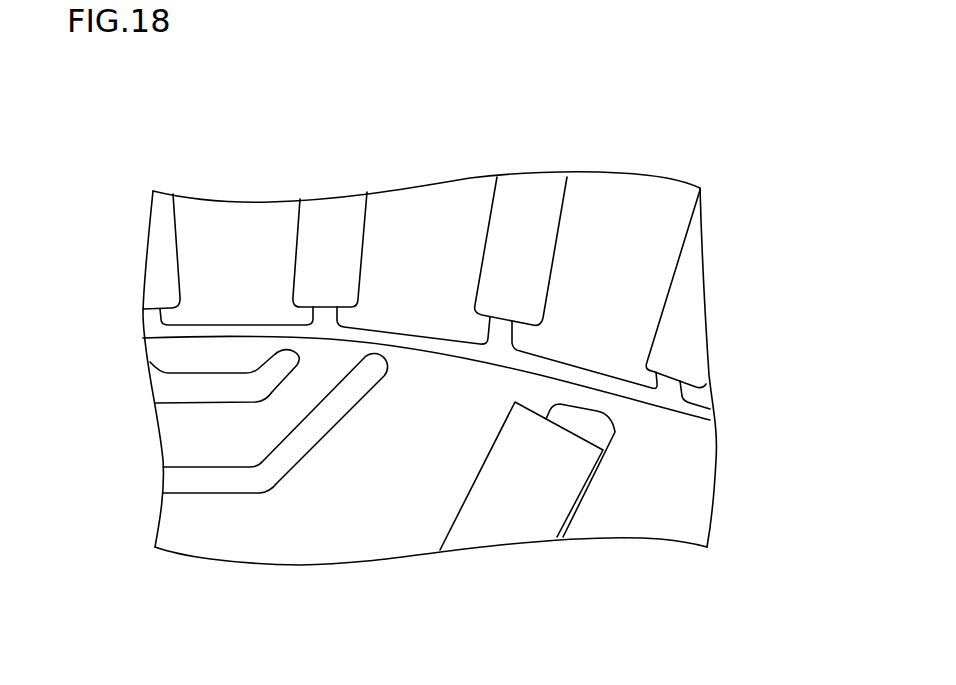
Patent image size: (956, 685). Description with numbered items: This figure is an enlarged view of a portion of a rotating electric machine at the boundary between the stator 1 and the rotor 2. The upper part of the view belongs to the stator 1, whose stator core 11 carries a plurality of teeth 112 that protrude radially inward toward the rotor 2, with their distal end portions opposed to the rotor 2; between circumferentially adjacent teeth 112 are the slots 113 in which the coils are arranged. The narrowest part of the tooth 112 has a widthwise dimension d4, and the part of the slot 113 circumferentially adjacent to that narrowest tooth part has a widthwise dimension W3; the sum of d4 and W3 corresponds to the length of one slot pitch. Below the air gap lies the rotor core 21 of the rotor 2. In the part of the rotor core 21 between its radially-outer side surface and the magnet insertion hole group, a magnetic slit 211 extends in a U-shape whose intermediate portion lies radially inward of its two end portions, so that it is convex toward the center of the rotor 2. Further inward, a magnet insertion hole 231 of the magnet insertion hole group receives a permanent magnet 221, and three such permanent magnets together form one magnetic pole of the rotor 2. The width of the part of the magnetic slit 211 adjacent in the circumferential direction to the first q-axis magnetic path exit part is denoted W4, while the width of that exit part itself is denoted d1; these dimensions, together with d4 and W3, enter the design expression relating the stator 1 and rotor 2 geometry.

The stator 1 is at (183, 197).
The stator core 11 is at (247, 207).
The tooth 112 is at (420, 197).
The slot 113 is at (495, 206).
The rotor 2 is at (313, 566).
The rotor core 21 is at (383, 551).
The magnetic slit 211 is at (218, 480).
The permanent magnet 221 is at (507, 523).
The magnet insertion hole 231 is at (598, 428).
The widthwise dimension of first q-axis magnetic path exit part d1 is at (395, 372).
The smallest widthwise dimension of tooth d4 is at (360, 297).
The widthwise dimension of slot W3 is at (473, 313).
The widthwise dimension of magnetic slit W4 is at (362, 364).